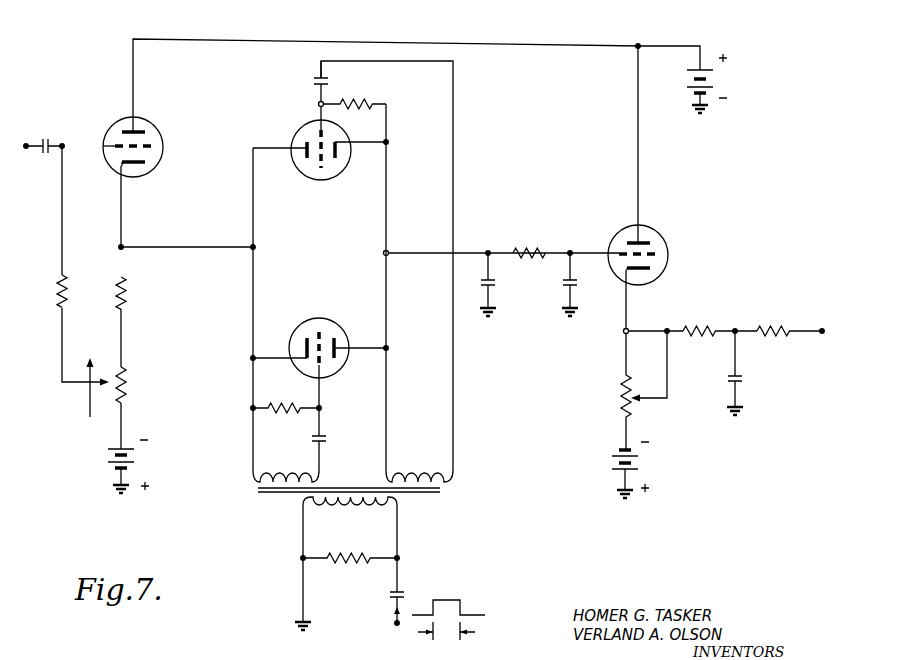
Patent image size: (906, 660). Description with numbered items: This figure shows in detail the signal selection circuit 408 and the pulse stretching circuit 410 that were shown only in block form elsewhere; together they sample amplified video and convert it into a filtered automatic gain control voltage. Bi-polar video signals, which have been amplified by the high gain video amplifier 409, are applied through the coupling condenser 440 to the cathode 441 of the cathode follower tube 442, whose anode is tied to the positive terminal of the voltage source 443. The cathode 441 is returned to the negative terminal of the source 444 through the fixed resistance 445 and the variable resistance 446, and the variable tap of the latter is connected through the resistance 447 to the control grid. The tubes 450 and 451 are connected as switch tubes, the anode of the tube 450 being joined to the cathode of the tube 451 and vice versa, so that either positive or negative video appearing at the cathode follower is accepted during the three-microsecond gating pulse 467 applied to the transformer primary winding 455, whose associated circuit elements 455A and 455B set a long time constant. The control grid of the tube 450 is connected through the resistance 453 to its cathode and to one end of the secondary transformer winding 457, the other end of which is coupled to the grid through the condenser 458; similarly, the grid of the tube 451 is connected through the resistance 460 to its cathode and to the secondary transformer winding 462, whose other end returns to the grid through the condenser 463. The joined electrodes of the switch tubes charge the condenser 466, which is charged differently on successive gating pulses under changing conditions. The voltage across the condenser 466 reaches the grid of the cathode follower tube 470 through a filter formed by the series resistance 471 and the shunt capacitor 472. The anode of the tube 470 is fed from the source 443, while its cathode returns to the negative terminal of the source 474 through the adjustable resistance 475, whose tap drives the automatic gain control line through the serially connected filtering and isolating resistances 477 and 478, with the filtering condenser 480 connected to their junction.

The signal selection circuit 408 is at (444, 265).
The multivibrator circuit 410 is at (478, 168).
The high gain video amplifier 409 is at (161, 140).
The coupling condenser 440 is at (48, 138).
The cathode 441 is at (138, 165).
The cathode follower tube 442 is at (165, 147).
The voltage source 443 is at (688, 92).
The source 444 is at (140, 460).
The fixed resistance 445 is at (128, 297).
The variable resistance 446 is at (128, 382).
The resistance 447 is at (68, 298).
The switch tube 450 is at (322, 180).
The switch tube 451 is at (336, 375).
The resistance 453 is at (362, 102).
The transformer primary winding 455 is at (330, 520).
The circuit element of the primary winding time-constant circuit 455A is at (350, 570).
The circuit element of the primary winding time-constant circuit 455B is at (392, 598).
The secondary transformer winding 457 is at (415, 466).
The condenser 458 is at (316, 86).
The resistance 460 is at (282, 406).
The secondary transformer winding 462 is at (280, 467).
The condenser 463 is at (330, 440).
The condenser 466 is at (496, 283).
The gating pulse 467 is at (447, 600).
The cathode follower tube 470 is at (668, 255).
The resistance 471 is at (540, 250).
The capacitor 472 is at (565, 292).
The source 474 is at (645, 462).
The adjustable resistance 475 is at (618, 400).
The filtering and isolating resistance 477 is at (708, 328).
The filtering and isolating resistance 478 is at (772, 328).
The filtering condenser 480 is at (743, 385).